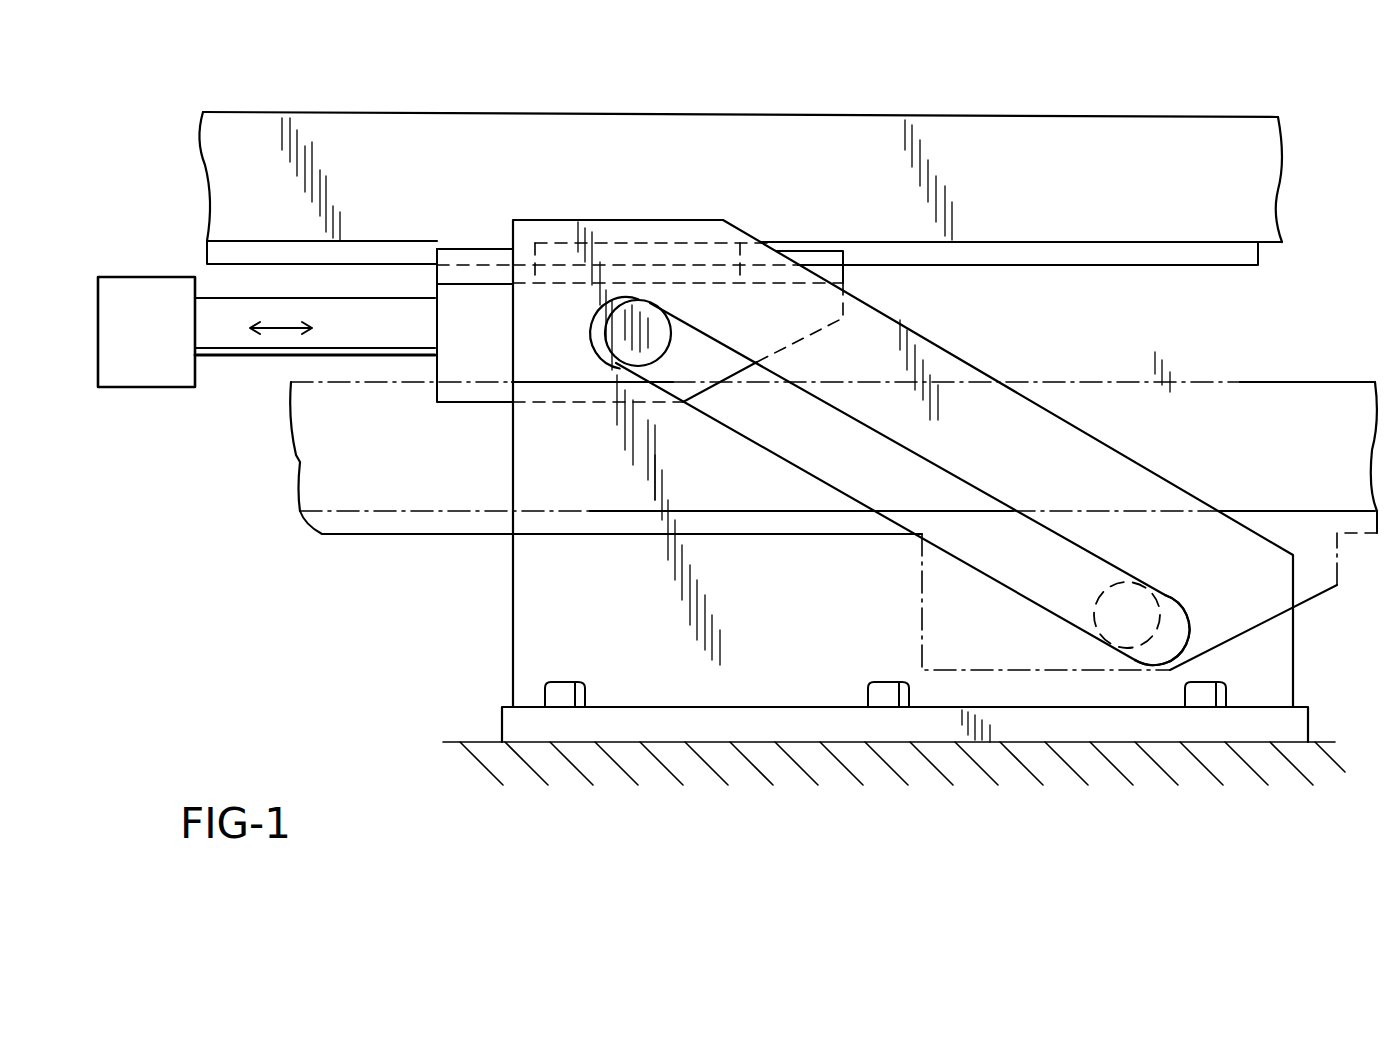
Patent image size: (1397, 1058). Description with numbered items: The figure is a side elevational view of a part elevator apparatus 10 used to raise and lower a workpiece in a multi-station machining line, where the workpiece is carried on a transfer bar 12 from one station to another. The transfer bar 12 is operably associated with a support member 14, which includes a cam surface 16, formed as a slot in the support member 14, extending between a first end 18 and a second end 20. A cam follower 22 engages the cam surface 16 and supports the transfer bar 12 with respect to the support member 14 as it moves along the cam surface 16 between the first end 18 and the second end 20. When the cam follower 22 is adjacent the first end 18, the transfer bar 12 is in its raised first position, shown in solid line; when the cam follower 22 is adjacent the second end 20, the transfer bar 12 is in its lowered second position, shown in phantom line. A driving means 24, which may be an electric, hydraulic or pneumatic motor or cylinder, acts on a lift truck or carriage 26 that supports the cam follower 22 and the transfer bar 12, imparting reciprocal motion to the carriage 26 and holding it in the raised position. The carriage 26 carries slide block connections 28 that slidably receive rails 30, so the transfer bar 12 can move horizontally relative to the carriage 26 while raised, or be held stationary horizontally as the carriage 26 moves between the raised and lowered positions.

The apparatus 10 is at (311, 614).
The transfer bar 12 is at (1097, 122).
The support member 14 is at (527, 590).
The cam surface 16 is at (848, 478).
The first end 18 is at (600, 305).
The second end 20 is at (1180, 642).
The cam follower 22 is at (675, 365).
The driving means 24 is at (140, 388).
The lift truck or carriage 26 is at (460, 305).
The slide block connection 28 is at (460, 252).
The rail 30 is at (1137, 266).